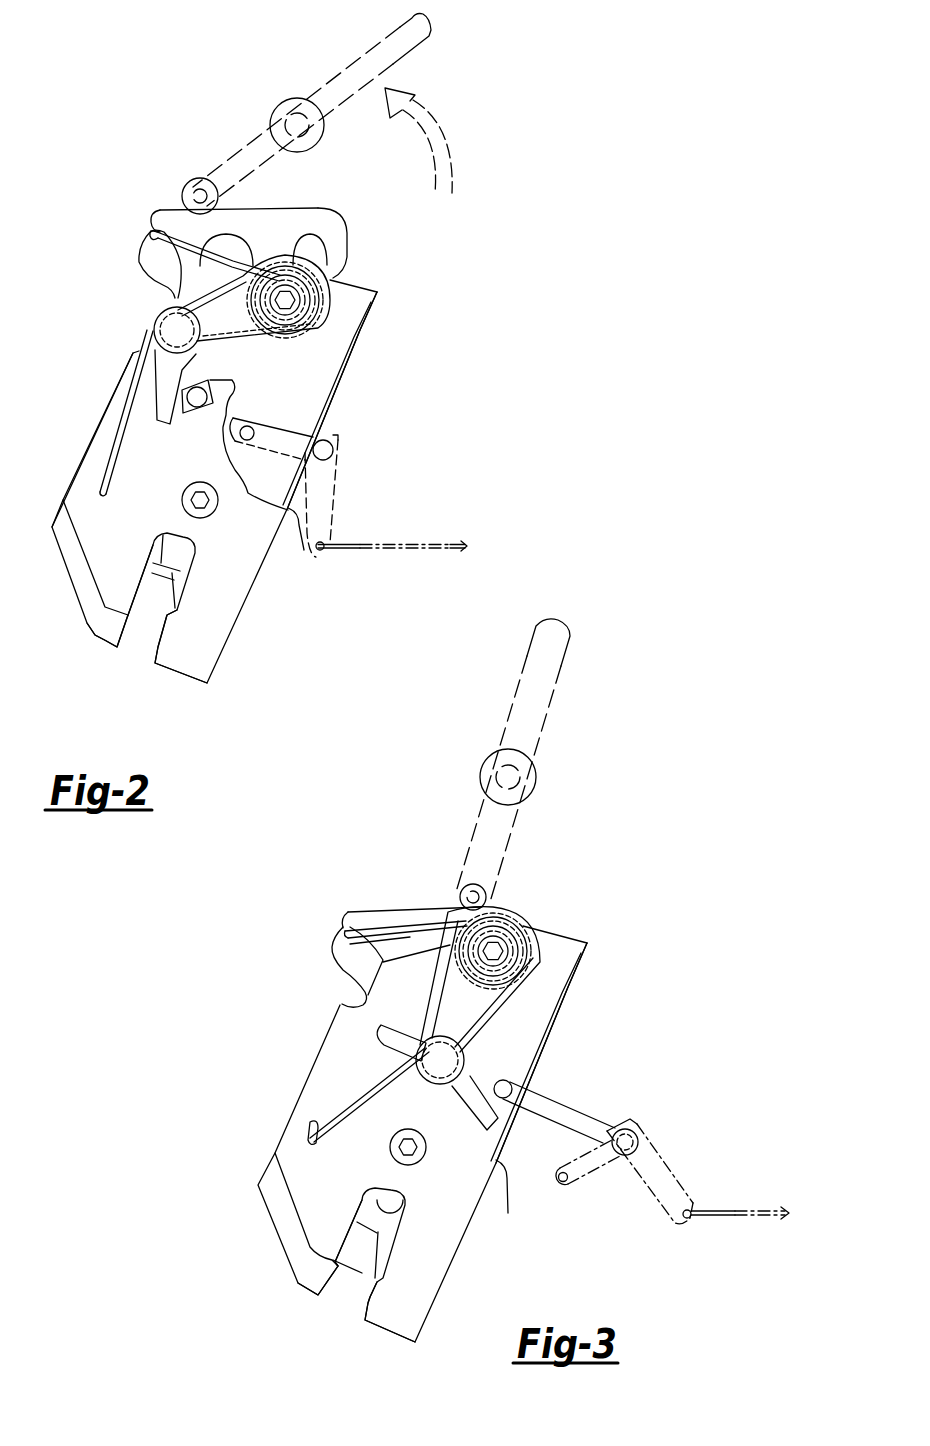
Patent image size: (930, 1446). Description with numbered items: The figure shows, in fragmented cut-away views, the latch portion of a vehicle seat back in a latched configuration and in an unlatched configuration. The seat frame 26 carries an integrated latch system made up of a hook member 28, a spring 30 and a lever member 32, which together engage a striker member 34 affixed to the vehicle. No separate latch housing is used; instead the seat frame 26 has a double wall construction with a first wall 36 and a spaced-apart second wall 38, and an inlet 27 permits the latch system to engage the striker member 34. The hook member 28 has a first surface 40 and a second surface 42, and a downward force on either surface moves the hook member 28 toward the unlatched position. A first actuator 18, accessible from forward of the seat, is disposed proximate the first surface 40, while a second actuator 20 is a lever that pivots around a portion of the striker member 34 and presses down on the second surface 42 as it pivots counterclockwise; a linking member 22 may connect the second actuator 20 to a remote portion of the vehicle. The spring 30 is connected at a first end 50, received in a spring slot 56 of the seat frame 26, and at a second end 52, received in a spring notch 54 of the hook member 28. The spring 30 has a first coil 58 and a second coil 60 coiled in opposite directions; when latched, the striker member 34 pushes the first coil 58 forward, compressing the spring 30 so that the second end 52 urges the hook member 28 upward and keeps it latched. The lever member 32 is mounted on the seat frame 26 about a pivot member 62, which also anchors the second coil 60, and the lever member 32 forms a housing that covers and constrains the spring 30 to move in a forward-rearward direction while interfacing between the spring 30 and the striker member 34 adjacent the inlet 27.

In FIG. 2, the first actuator 18 is at (232, 152).
In FIG. 3, the first actuator 18 is at (553, 706).
In FIG. 2, the second actuator 20 is at (335, 450).
In FIG. 3, the second actuator 20 is at (647, 1195).
In FIG. 2, the linking member 22 is at (438, 545).
In FIG. 3, the linking member 22 is at (715, 1211).
In FIG. 2, the seat frame 26 is at (247, 603).
In FIG. 3, the seat frame 26 is at (453, 1250).
In FIG. 2, the inlet 27 is at (373, 363).
In FIG. 3, the inlet 27 is at (548, 1017).
In FIG. 2, the hook member 28 is at (313, 227).
In FIG. 2, the spring 30 is at (122, 407).
In FIG. 2, the lever member 32 is at (230, 348).
In FIG. 3, the lever member 32 is at (533, 967).
In FIG. 2, the striker member 34 is at (200, 408).
In FIG. 3, the striker member 34 is at (550, 1100).
In FIG. 2, the first wall 36 is at (217, 623).
In FIG. 3, the first wall 36 is at (428, 1290).
In FIG. 2, the second wall 38 is at (167, 645).
In FIG. 3, the second wall 38 is at (367, 1300).
In FIG. 2, the first surface 40 is at (265, 208).
In FIG. 3, the first surface 40 is at (400, 910).
In FIG. 2, the second surface 42 is at (247, 414).
In FIG. 2, the first end 50 is at (105, 475).
In FIG. 3, the first end 50 is at (312, 1145).
In FIG. 2, the second end 52 is at (153, 243).
In FIG. 3, the second end 52 is at (353, 918).
In FIG. 2, the spring notch 54 is at (152, 228).
In FIG. 3, the spring notch 54 is at (348, 935).
In FIG. 2, the spring slot 56 is at (104, 478).
In FIG. 3, the spring slot 56 is at (312, 1125).
In FIG. 2, the first coil 58 is at (165, 323).
In FIG. 3, the first coil 58 is at (428, 1086).
In FIG. 2, the second coil 60 is at (340, 268).
In FIG. 3, the second coil 60 is at (550, 920).
In FIG. 2, the pivot member 62 is at (291, 300).
In FIG. 3, the pivot member 62 is at (498, 949).